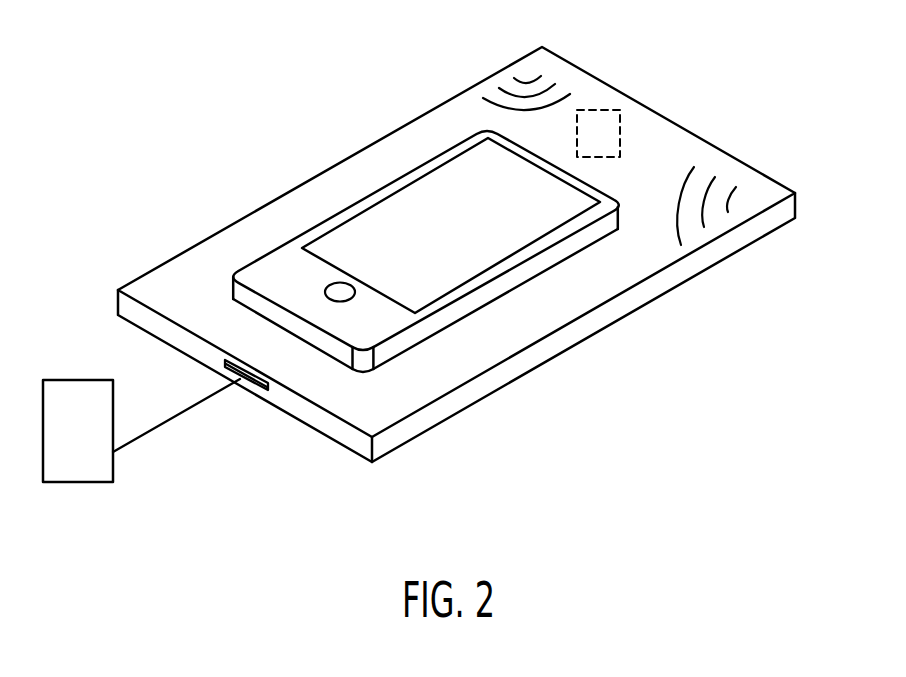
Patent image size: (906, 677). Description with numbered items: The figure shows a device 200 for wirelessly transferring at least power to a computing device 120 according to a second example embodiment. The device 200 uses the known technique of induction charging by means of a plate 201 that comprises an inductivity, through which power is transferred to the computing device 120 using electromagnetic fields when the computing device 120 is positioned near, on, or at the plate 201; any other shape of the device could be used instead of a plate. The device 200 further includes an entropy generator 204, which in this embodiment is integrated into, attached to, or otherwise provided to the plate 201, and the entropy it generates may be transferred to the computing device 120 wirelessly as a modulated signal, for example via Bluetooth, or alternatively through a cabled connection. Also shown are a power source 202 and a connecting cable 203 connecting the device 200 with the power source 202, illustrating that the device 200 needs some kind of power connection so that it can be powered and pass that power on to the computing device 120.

The device 200 is at (630, 391).
The plate 201 is at (745, 232).
The power source 202 is at (73, 473).
The connecting cable 203 is at (175, 417).
The entropy generator 204 is at (602, 119).
The computing device 120 is at (602, 197).